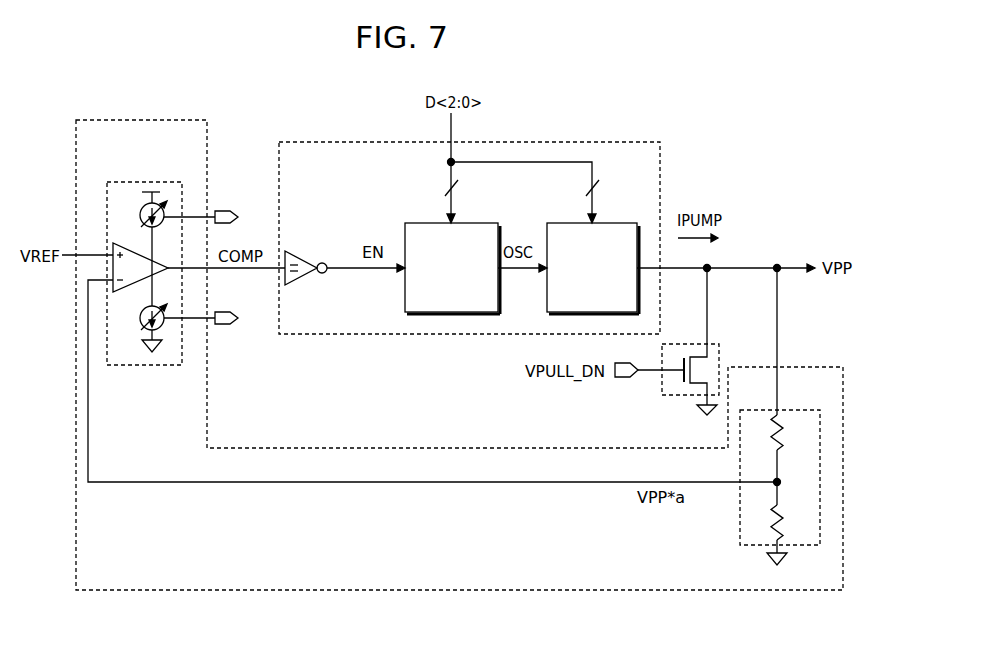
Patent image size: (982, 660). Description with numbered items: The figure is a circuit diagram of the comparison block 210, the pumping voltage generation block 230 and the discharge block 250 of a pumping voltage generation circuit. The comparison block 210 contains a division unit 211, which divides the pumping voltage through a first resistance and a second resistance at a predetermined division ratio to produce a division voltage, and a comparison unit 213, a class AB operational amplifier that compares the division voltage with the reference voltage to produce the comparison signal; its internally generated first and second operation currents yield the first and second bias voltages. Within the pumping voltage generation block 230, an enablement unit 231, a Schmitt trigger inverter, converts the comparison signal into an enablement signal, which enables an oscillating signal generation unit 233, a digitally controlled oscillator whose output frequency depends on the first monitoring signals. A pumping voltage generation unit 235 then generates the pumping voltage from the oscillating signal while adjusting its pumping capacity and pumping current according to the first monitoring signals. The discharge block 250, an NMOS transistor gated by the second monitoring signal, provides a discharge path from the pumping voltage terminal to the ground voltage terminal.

The comparison block 210 is at (196, 120).
The division unit 211 is at (782, 411).
The comparison unit 213 is at (150, 184).
The pumping voltage generation block 230 is at (637, 141).
The enablement unit 231 is at (305, 263).
The oscillating signal generation unit 233 is at (470, 222).
The pumping voltage generation unit 235 is at (612, 222).
The discharge block 250 is at (710, 341).